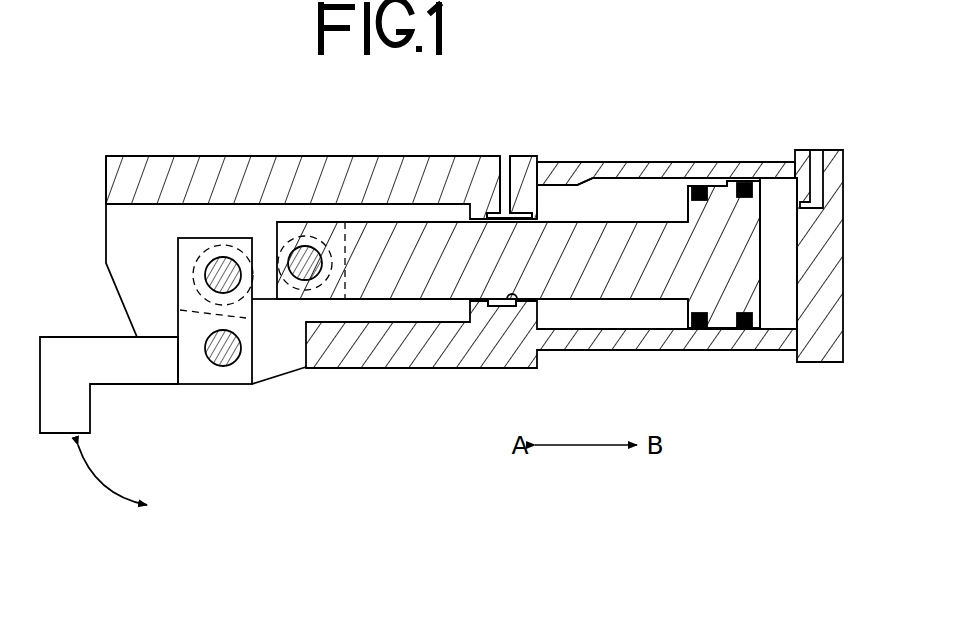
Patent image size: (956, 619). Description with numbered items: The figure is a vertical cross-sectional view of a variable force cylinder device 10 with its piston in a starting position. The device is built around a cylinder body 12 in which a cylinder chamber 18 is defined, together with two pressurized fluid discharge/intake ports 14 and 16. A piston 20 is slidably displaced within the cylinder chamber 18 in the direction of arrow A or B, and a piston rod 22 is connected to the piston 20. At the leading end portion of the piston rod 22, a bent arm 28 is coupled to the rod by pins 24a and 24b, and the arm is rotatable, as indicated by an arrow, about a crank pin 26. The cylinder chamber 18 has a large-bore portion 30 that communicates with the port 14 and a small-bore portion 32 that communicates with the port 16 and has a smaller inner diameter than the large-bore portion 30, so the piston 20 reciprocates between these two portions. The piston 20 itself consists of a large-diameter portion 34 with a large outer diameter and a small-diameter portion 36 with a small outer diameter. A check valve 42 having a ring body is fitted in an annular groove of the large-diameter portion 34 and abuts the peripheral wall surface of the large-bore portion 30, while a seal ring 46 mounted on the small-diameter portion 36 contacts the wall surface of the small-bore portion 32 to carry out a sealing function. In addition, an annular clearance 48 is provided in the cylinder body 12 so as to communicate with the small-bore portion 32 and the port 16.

The variable force cylinder device 10 is at (648, 85).
The cylinder body 12 is at (403, 153).
The pressurized fluid discharge/intake port 14 is at (815, 148).
The pressurized fluid discharge/intake port 16 is at (503, 154).
The cylinder chamber 18 is at (595, 192).
The piston 20 is at (718, 331).
The piston rod 22 is at (441, 292).
The pin 24a is at (308, 246).
The pin 24b is at (229, 258).
The crank pin 26 is at (227, 366).
The bent arm 28 is at (147, 373).
The large-bore portion 30 is at (772, 197).
The small-bore portion 32 is at (557, 196).
The large-diameter portion 34 is at (757, 182).
The small-diameter portion 36 is at (693, 188).
The check valve 42 is at (750, 329).
The seal ring 46 is at (700, 331).
The annular clearance 48 is at (512, 303).